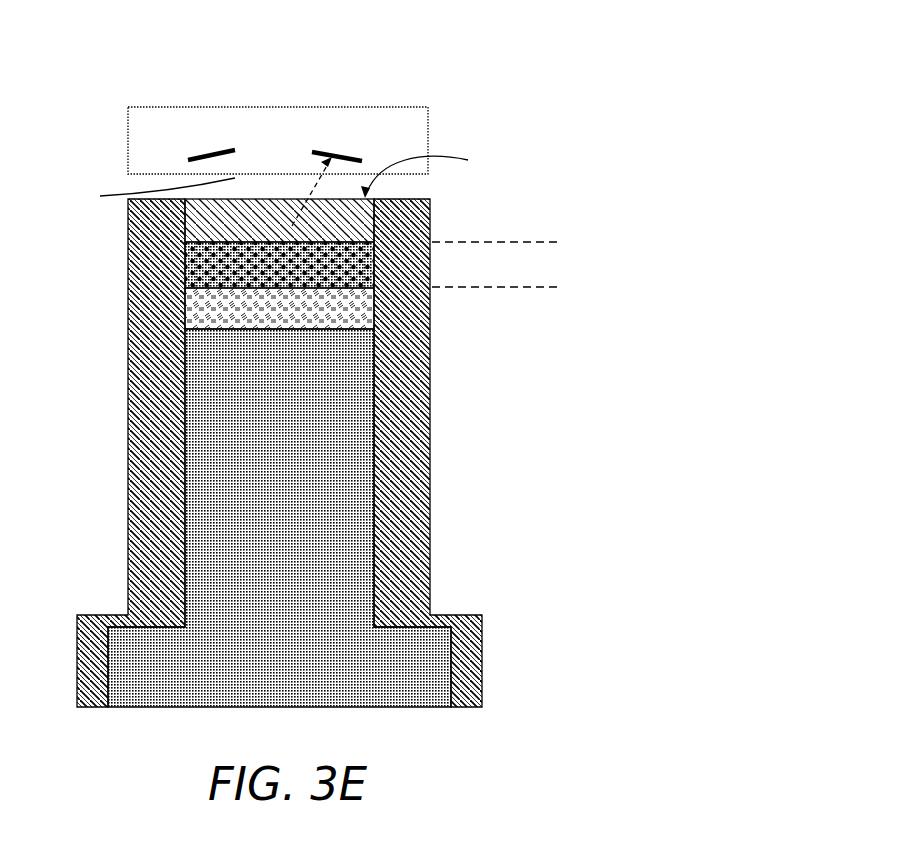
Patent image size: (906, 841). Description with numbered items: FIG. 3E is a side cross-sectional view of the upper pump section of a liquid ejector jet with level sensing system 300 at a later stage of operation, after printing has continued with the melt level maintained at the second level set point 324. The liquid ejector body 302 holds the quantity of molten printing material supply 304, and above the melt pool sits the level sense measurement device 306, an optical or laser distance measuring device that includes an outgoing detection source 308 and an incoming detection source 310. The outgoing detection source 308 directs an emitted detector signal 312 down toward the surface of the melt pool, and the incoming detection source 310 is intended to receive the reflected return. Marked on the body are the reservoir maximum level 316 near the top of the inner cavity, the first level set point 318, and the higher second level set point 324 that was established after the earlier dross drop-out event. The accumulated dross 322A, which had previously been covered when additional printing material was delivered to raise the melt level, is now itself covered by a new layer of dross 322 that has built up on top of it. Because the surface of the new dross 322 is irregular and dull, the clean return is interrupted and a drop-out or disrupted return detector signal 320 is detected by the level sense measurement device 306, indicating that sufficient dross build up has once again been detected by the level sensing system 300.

The liquid ejector jet with level sensing system 300 is at (143, 60).
The liquid ejector body 302 is at (129, 423).
The molten printing material supply 304 is at (218, 532).
The level sense measurement device 306 is at (400, 117).
The outgoing detection source 308 is at (270, 240).
The incoming detection source 310 is at (328, 155).
The emitted detector signal 312 is at (151, 194).
The reservoir maximum level 316 is at (431, 174).
The first level set point 318 is at (518, 288).
The disrupted return detector signal 320 is at (295, 213).
The dross 322 is at (185, 268).
The accumulated dross 322A is at (185, 304).
The second level set point 324 is at (517, 242).